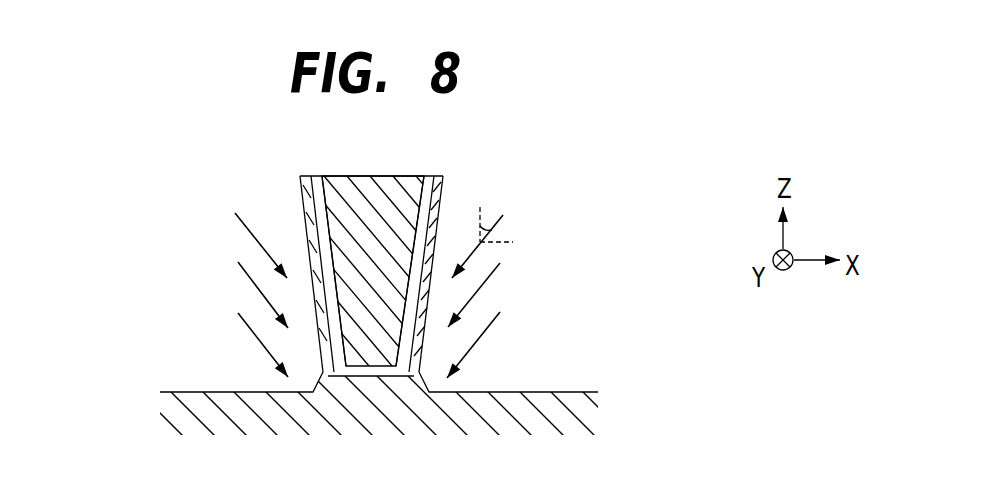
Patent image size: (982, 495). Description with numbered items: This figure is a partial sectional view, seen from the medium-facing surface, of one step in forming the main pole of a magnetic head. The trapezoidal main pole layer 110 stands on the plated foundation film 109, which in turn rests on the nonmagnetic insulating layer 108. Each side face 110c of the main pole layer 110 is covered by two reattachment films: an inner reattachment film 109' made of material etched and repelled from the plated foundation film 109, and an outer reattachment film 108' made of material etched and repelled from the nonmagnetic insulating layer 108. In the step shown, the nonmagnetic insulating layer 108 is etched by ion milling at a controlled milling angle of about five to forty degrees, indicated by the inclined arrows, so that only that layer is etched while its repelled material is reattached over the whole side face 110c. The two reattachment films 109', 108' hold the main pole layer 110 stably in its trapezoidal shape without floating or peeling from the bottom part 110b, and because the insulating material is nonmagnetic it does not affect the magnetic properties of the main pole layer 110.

The nonmagnetic insulating layer 108 is at (386, 400).
The reattachment film 108' is at (371, 274).
The plated foundation film 109 is at (363, 431).
The reattachment film 109' is at (371, 274).
The main pole layer 110 is at (381, 243).
The bottom part 110b is at (380, 343).
The side face 110c is at (334, 268).